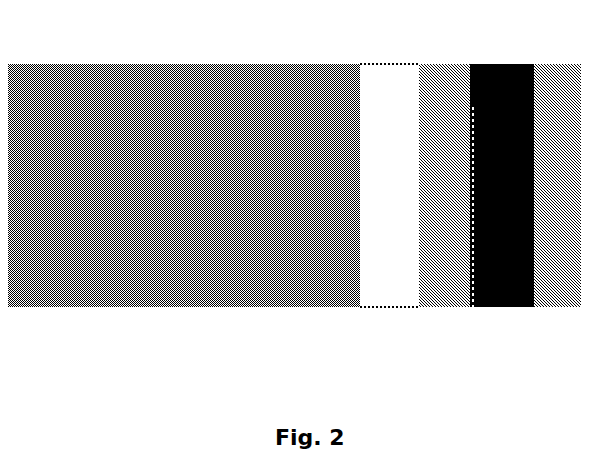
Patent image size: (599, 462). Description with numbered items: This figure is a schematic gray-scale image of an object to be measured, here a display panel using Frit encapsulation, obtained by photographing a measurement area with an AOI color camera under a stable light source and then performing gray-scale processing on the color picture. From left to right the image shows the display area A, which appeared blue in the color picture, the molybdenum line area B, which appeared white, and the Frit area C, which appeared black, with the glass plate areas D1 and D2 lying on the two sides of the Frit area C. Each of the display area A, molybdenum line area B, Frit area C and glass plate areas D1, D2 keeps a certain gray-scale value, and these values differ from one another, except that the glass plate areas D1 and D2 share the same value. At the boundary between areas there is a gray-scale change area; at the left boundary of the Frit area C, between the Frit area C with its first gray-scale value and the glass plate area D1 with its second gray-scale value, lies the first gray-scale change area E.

The display area A is at (184, 64).
The molybdenum line area B is at (390, 64).
The Frit area C is at (498, 64).
The glass plate area D1 is at (440, 64).
The glass plate area D2 is at (556, 64).
The first gray-scale change area E is at (470, 268).